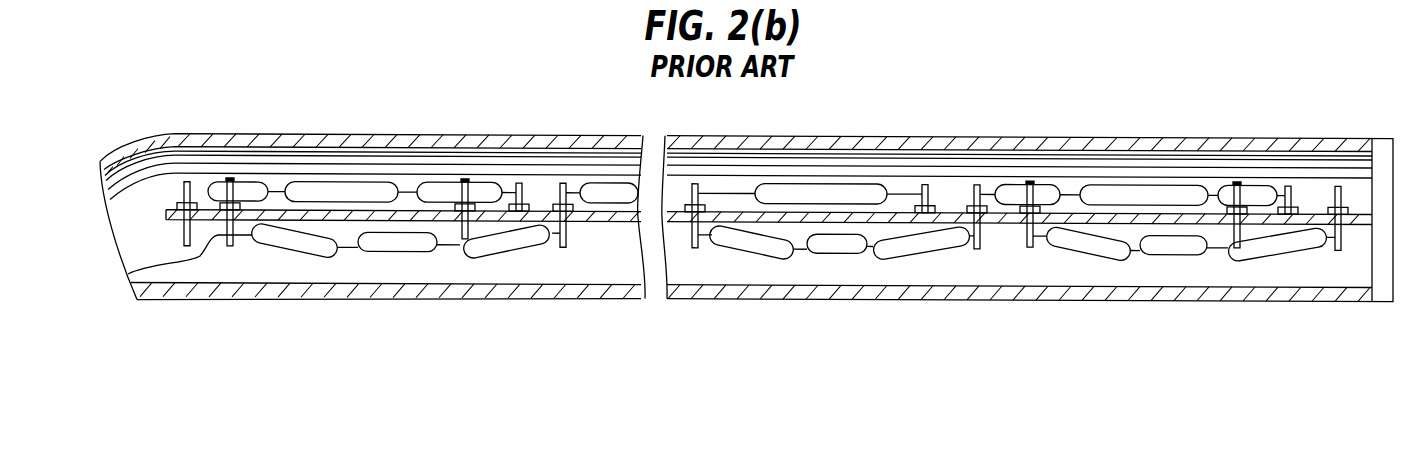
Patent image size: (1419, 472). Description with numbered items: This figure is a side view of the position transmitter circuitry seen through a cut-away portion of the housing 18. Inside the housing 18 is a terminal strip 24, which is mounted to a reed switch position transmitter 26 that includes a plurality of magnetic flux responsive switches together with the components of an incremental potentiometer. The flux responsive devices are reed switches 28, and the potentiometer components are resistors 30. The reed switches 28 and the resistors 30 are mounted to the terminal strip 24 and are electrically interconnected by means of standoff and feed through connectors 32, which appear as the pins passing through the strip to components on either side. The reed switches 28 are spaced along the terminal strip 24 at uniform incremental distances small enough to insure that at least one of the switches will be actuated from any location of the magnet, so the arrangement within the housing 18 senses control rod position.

The housing 18 is at (245, 134).
The terminal strip 24 is at (207, 264).
The reed switch position transmitter 26 is at (599, 262).
The reed switches 28 is at (338, 181).
The resistors 30 is at (400, 254).
The standoff and feed through connectors 32 is at (1298, 200).